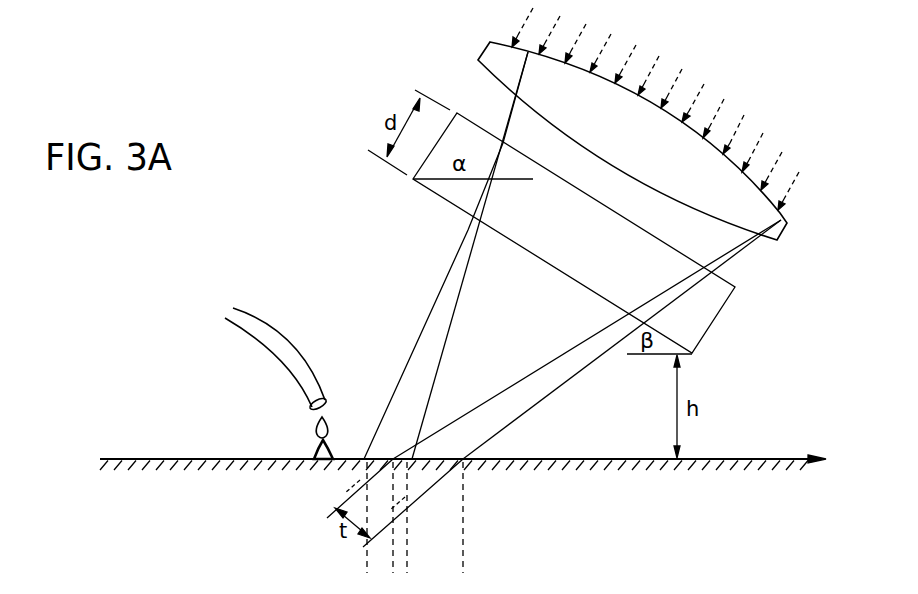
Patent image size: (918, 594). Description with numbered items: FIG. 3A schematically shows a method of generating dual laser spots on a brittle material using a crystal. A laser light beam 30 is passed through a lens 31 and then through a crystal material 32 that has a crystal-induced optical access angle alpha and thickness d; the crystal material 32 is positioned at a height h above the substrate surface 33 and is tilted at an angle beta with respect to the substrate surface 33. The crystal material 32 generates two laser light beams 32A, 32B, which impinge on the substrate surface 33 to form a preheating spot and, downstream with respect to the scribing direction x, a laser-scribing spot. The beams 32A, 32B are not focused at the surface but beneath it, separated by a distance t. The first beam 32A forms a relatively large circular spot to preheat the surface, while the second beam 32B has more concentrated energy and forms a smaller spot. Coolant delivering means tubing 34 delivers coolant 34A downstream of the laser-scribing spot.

The laser light beam 30 is at (655, 109).
The lens 31 is at (787, 228).
The crystal material 32 is at (712, 318).
The laser light beam 32A is at (552, 393).
The laser light beam 32B is at (432, 308).
The substrate surface 33 is at (730, 458).
The coolant delivering means tubing 34 is at (233, 303).
The coolant 34A is at (333, 420).